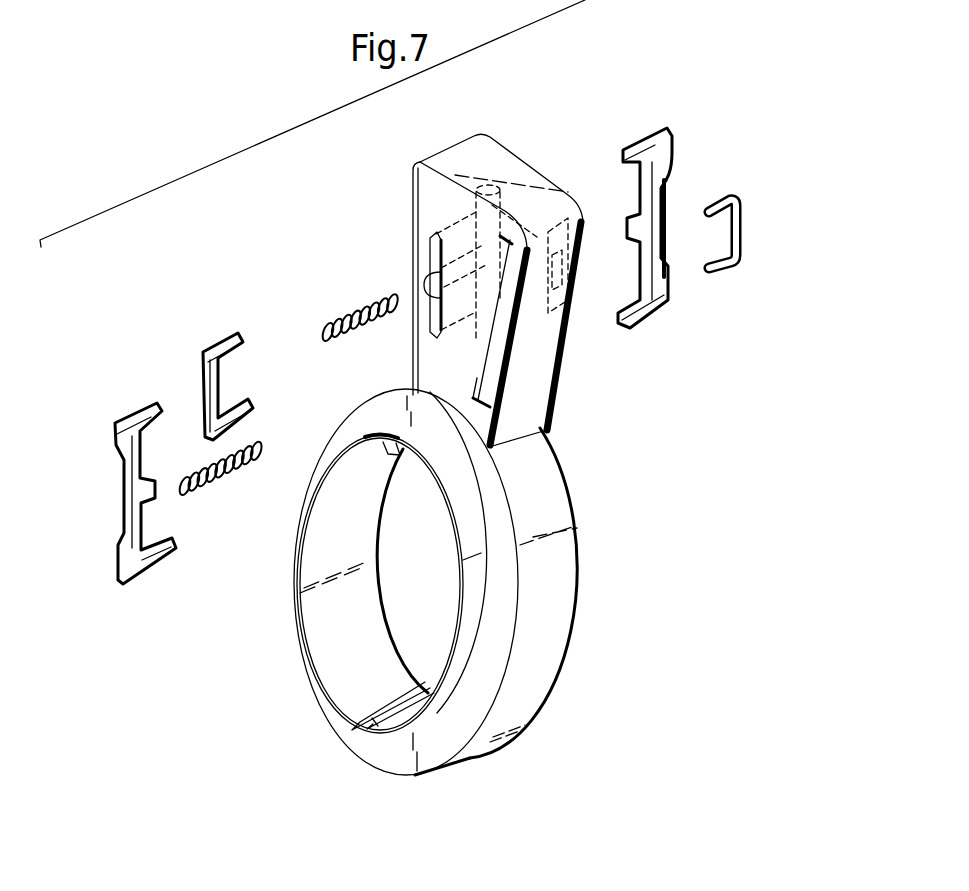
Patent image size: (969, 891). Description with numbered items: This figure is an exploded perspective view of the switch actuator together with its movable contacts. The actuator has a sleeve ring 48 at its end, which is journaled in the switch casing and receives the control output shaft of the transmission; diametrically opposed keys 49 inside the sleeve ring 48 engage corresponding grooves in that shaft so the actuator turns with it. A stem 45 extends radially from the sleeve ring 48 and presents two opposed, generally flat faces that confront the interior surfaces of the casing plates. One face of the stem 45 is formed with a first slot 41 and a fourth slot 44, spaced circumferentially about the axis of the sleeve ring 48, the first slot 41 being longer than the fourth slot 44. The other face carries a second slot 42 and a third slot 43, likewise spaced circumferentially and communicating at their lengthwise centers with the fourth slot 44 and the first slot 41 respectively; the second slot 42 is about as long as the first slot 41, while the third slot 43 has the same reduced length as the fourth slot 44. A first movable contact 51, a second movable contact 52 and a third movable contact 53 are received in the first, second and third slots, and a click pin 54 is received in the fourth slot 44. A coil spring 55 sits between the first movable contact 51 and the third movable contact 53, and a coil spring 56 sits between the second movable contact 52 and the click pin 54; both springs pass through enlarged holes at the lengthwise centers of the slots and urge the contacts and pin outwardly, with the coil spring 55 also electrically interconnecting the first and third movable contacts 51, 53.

The first slot 41 is at (497, 185).
The second slot 42 is at (548, 413).
The third slot 43 is at (430, 255).
The fourth slot 44 is at (553, 335).
The stem 45 is at (420, 162).
The sleeve ring 48 is at (548, 632).
The keys 49 is at (353, 730).
The first movable contact 51 is at (672, 158).
The second movable contact 52 is at (120, 568).
The third movable contact 53 is at (203, 370).
The click pin 54 is at (740, 227).
The coil spring 55 is at (358, 305).
The coil spring 56 is at (233, 465).